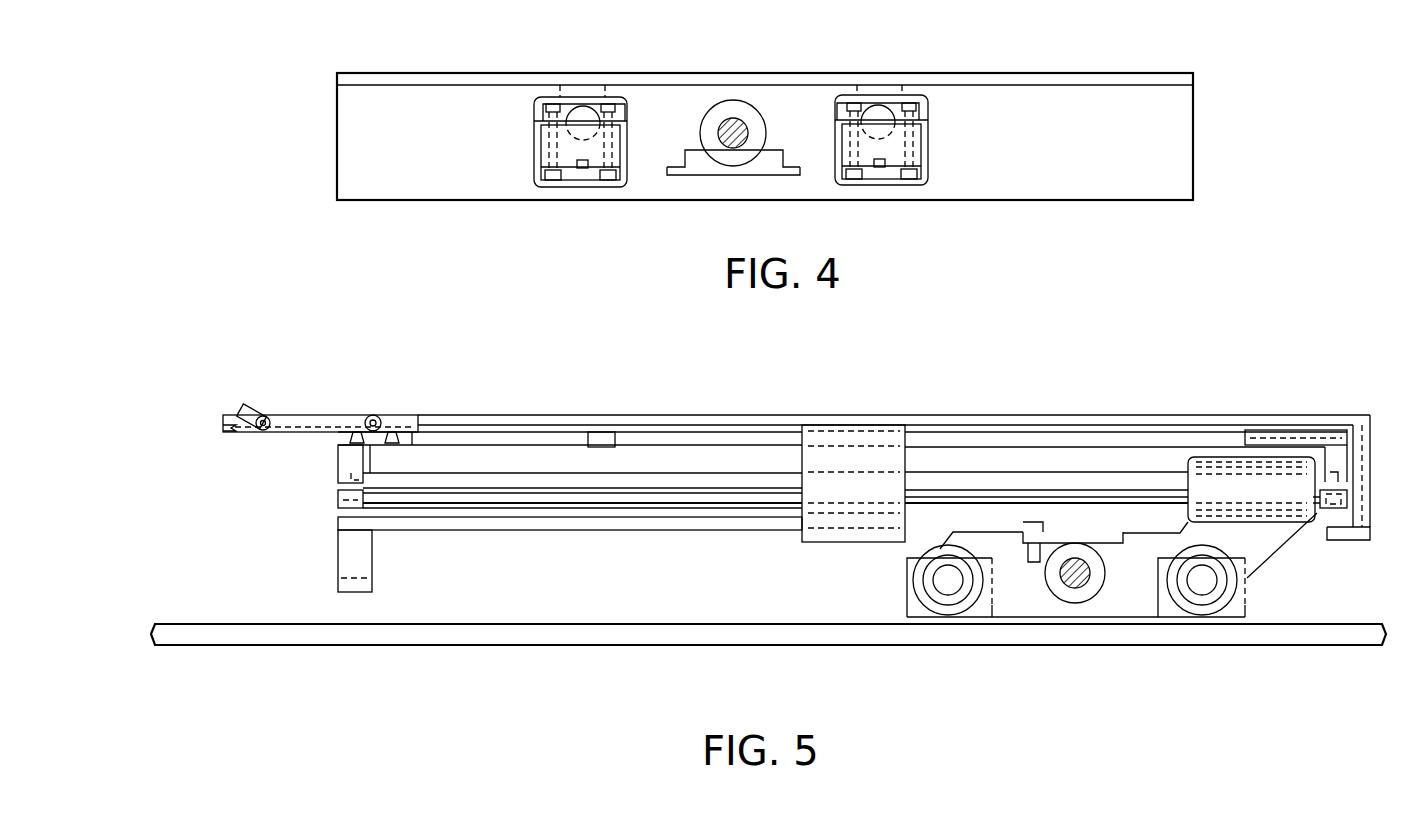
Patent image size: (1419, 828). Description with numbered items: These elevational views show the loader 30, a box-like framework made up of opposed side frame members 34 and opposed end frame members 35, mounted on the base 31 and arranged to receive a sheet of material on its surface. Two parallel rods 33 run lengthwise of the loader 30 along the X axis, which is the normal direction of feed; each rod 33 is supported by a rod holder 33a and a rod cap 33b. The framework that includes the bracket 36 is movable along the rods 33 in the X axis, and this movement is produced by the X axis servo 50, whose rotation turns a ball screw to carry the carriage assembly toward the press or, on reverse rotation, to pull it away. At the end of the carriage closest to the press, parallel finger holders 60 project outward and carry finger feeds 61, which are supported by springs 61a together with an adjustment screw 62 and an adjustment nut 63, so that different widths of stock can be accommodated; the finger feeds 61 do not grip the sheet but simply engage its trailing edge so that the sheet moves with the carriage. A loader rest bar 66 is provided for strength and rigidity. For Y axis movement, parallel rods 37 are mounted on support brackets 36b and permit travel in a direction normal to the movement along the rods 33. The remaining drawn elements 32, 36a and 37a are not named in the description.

In FIG. 4, the loader 30 is at (1208, 139).
In FIG. 5, the loader 30 is at (1169, 400).
In FIG. 5, the base 31 is at (664, 633).
In FIG. 4, the frame member 32 is at (930, 138).
In FIG. 4, the parallel rods 33 is at (589, 112).
In FIG. 5, the parallel rods 33 is at (752, 483).
In FIG. 4, the rod holder 33a is at (543, 152).
In FIG. 4, the rod cap 33b is at (534, 114).
In FIG. 5, the side frame member 34 is at (1273, 421).
In FIG. 4, the end frame member 35 is at (1043, 72).
In FIG. 5, the bracket 36 is at (1285, 533).
In FIG. 5, the drive wheel 36a is at (1083, 591).
In FIG. 5, the support bracket 36b is at (1255, 572).
In FIG. 5, the parallel rods 37 is at (950, 586).
In FIG. 5, the roller bracket 37a is at (932, 605).
In FIG. 4, the X axis servo 50 is at (735, 145).
In FIG. 5, the finger holder 60 is at (327, 415).
In FIG. 5, the finger feed 61 is at (252, 410).
In FIG. 5, the spring 61a is at (238, 429).
In FIG. 5, the adjustment screw 62 is at (375, 414).
In FIG. 5, the adjustment nut 63 is at (362, 441).
In FIG. 5, the loader rest bar 66 is at (592, 522).